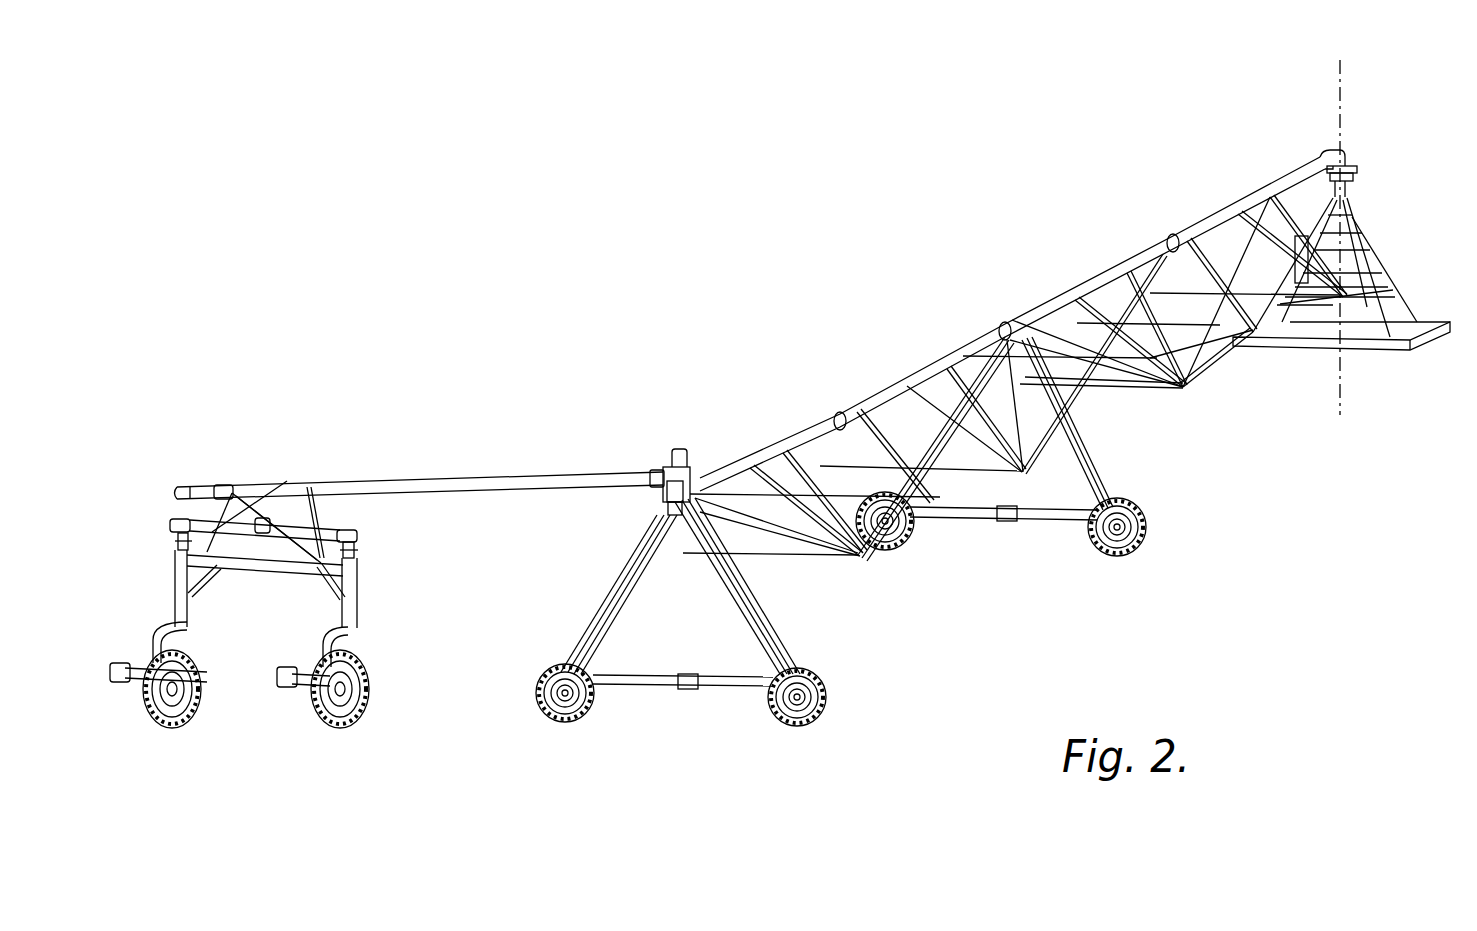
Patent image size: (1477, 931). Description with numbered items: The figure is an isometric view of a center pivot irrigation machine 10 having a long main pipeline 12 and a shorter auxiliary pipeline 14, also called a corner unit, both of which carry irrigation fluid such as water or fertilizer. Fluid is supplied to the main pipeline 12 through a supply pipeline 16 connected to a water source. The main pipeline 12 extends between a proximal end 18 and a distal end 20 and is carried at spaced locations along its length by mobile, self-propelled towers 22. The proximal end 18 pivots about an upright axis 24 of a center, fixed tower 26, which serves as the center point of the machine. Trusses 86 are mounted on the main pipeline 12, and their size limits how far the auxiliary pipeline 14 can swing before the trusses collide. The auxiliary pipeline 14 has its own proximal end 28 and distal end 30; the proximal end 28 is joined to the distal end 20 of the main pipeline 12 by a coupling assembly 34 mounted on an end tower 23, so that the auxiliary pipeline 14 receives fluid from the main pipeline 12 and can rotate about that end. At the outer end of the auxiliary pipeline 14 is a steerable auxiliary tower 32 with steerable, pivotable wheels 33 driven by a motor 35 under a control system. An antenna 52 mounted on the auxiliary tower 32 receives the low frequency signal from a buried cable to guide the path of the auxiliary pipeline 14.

The center pivot irrigation machine 10 is at (971, 253).
The main pipeline 12 is at (1143, 250).
The auxiliary pipeline 14 is at (472, 480).
The supply pipeline 16 is at (1349, 234).
The proximal end 18 is at (1316, 131).
The distal end 20 is at (706, 434).
The mobile self-propelled tower 22 is at (1080, 441).
The end tower 23 is at (764, 612).
The upright axis 24 is at (1344, 96).
The center fixed tower 26 is at (1393, 292).
The proximal end 28 is at (654, 436).
The distal end 30 is at (192, 462).
The steerable auxiliary tower 32 is at (352, 570).
The steerable pivotable wheel 33 is at (352, 690).
The coupling assembly 34 is at (666, 497).
The motor 35 is at (117, 661).
The antenna 52 is at (200, 633).
The truss 86 is at (864, 560).